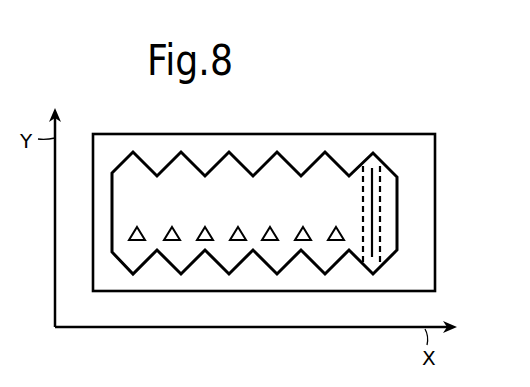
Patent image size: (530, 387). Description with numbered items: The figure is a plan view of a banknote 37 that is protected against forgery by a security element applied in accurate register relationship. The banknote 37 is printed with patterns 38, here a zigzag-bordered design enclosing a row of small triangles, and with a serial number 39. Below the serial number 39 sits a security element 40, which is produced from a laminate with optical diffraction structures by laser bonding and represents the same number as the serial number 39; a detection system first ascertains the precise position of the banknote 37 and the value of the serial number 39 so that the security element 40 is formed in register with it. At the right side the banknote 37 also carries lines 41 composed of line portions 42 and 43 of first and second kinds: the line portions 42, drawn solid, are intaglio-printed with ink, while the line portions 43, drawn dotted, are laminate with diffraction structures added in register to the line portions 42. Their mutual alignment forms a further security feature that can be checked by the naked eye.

The banknote 37 is at (427, 157).
The patterns 38 is at (172, 243).
The serial number 39 is at (140, 193).
The security element 40 is at (187, 218).
The lines 41 is at (356, 205).
The line portions of first kind 42 is at (381, 190).
The line portions of second kind 43 is at (383, 230).